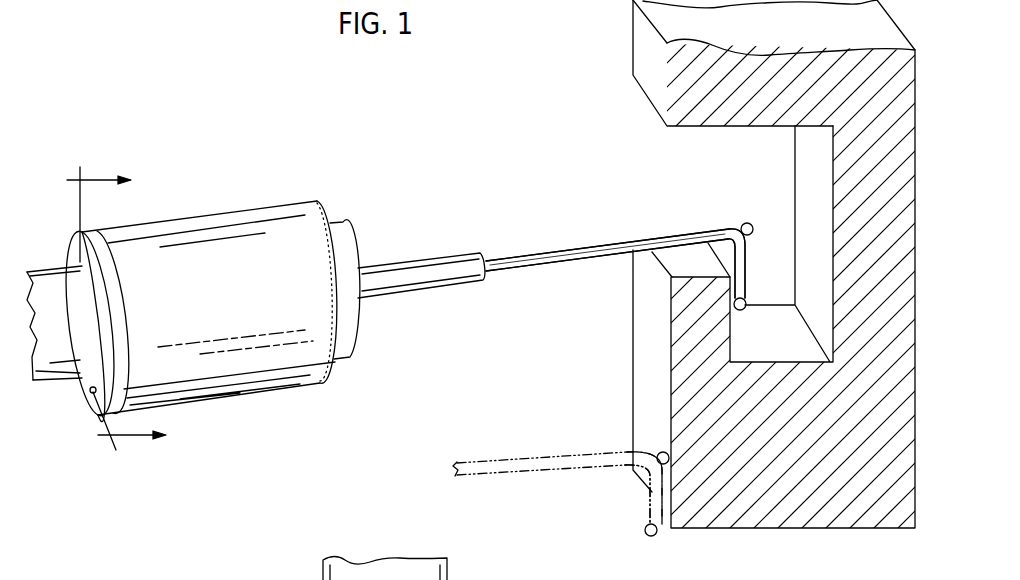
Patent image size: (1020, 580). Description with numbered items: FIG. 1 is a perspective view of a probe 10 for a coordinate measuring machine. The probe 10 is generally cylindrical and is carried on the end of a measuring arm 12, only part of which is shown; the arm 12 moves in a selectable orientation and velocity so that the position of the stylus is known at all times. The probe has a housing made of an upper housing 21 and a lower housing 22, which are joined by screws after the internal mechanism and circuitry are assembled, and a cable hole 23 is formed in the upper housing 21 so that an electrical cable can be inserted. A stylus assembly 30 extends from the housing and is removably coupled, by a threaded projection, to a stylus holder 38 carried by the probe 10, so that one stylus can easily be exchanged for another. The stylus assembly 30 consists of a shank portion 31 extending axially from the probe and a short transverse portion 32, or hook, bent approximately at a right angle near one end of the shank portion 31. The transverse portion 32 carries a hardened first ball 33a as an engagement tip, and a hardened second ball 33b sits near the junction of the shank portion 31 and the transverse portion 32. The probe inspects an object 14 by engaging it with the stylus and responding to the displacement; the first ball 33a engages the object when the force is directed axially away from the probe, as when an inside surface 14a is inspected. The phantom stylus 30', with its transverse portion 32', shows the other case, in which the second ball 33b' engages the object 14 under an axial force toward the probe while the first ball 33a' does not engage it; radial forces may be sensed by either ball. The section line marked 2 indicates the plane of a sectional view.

The probe 10 is at (523, 105).
The section line 2- 2 is at (127, 302).
The measuring arm 12 is at (45, 283).
The object 14 is at (814, 481).
The inside surface 14a is at (733, 336).
The upper housing 21 is at (241, 317).
The lower housing 22 is at (338, 363).
The cable hole 23 is at (90, 393).
The stylus assembly 30 is at (615, 241).
The stylus 30' is at (557, 464).
The shank portion 31 is at (639, 240).
The transverse portion 32 is at (755, 263).
The transverse portion 32' is at (625, 491).
The first ball 33a is at (765, 318).
The first ball 33a' is at (688, 552).
The second ball 33b is at (763, 212).
The second ball 33b' is at (652, 427).
The stylus holder 38 is at (398, 272).